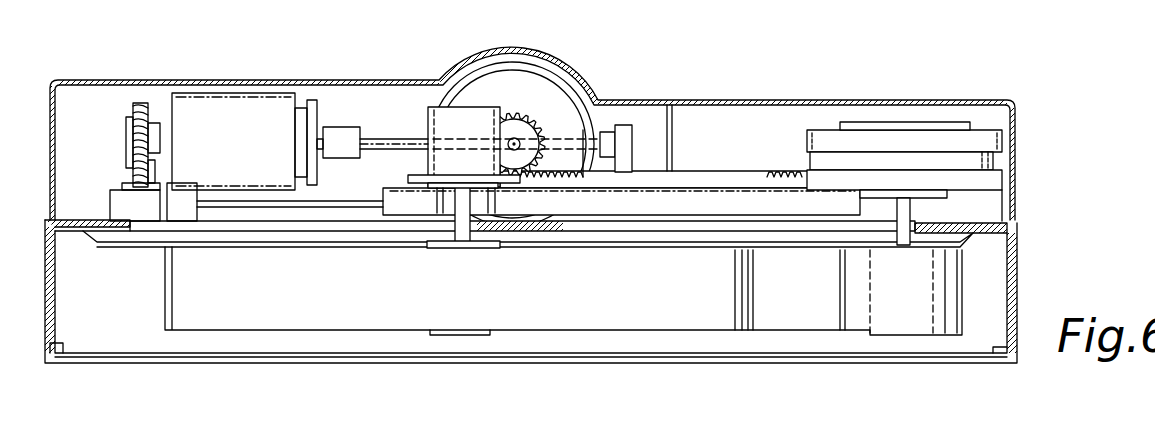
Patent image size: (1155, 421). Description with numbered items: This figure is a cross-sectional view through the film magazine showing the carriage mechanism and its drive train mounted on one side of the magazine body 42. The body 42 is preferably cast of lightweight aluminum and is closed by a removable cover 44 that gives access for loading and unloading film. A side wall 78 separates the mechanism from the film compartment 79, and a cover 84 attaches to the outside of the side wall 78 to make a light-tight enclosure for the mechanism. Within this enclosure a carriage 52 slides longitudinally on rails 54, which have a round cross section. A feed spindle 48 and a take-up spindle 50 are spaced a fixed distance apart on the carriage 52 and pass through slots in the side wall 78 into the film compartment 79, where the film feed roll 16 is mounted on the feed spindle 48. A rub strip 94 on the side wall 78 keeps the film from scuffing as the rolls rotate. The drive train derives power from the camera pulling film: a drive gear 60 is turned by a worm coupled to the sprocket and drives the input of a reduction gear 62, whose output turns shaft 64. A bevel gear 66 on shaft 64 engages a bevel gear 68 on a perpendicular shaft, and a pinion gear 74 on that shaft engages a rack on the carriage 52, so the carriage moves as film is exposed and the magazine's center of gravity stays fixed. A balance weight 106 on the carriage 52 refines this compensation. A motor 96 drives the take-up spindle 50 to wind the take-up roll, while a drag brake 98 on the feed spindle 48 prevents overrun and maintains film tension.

The film feed roll 16 is at (222, 313).
The body 42 is at (1018, 270).
The removable cover 44 is at (867, 360).
The feed spindle 48 is at (457, 223).
The take-up spindle 50 is at (908, 210).
The carriage 52 is at (615, 205).
The rails 54 is at (302, 208).
The drive gear 60 is at (140, 104).
The reduction gear 62 is at (237, 100).
The shaft 64 is at (388, 138).
The bevel gear 66 is at (600, 138).
The bevel gear 68 is at (548, 82).
The pinion gear 74 is at (515, 126).
The side wall 78 is at (705, 228).
The film compartment 79 is at (1000, 333).
The cover 84 is at (720, 100).
The rub strip 94 is at (120, 238).
The motor 96 is at (1000, 140).
The drag brake 98 is at (460, 110).
The weight 106 is at (893, 122).